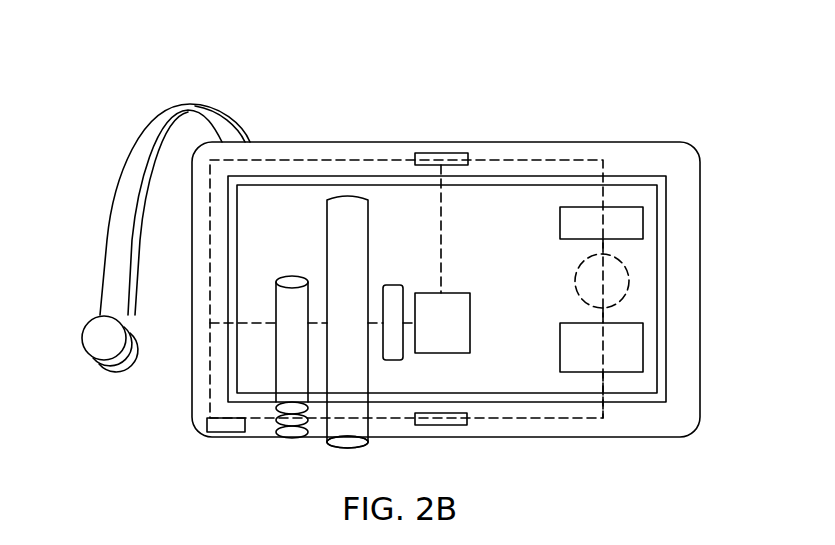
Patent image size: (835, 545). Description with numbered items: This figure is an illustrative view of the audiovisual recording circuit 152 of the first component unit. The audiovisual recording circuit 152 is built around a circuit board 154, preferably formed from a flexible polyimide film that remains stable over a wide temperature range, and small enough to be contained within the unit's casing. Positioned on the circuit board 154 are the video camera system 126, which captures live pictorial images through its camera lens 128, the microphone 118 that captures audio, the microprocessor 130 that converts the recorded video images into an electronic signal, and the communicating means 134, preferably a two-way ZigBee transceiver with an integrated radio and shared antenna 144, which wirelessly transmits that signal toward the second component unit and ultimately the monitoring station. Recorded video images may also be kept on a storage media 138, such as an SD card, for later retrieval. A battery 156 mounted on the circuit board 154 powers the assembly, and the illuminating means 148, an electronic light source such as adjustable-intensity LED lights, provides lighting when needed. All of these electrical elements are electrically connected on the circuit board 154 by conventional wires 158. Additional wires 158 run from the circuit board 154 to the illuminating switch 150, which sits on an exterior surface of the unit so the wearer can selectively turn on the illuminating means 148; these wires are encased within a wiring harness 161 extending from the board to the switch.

The microphone 118 is at (215, 432).
The video camera system 126 is at (349, 196).
The camera lens 128 is at (345, 448).
The microprocessor 130 is at (463, 350).
The communicating means 134 is at (640, 350).
The storage media 138 is at (643, 228).
The shared antenna 144 is at (390, 350).
The illuminating means 148 is at (278, 397).
The illuminating switch 150 is at (92, 347).
The audiovisual recording circuit 152 is at (660, 72).
The circuit board 154 is at (700, 203).
The battery 156 is at (629, 281).
The wires 158 is at (505, 158).
The wiring harness 161 is at (138, 125).